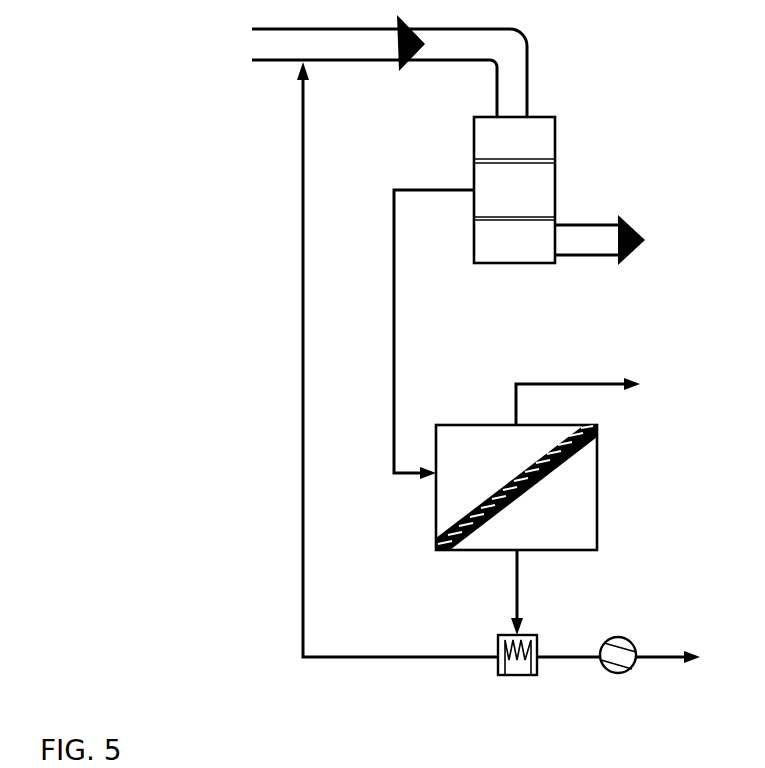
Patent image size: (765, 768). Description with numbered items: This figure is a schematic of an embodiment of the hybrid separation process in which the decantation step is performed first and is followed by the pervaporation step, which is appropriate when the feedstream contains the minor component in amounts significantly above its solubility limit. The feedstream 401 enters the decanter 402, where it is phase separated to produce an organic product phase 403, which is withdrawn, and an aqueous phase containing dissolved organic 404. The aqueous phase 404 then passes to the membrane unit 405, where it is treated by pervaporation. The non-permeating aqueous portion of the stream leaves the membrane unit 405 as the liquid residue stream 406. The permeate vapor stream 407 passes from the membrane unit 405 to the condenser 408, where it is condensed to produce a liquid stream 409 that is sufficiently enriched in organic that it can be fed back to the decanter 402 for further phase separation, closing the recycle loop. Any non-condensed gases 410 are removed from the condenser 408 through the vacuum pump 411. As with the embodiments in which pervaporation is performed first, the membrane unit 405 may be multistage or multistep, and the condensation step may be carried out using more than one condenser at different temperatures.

The feedstream 401 is at (389, 60).
The decanter 402 is at (514, 190).
The organic product phase 403 is at (625, 240).
The aqueous phase containing dissolved organic 404 is at (433, 320).
The membrane unit 405 is at (516, 487).
The liquid residue stream 406 is at (606, 398).
The permeate vapor stream 407 is at (542, 592).
The condenser 408 is at (518, 672).
The liquid stream 409 is at (397, 360).
The non-condensed gases 410 is at (644, 659).
The vacuum pump 411 is at (618, 668).